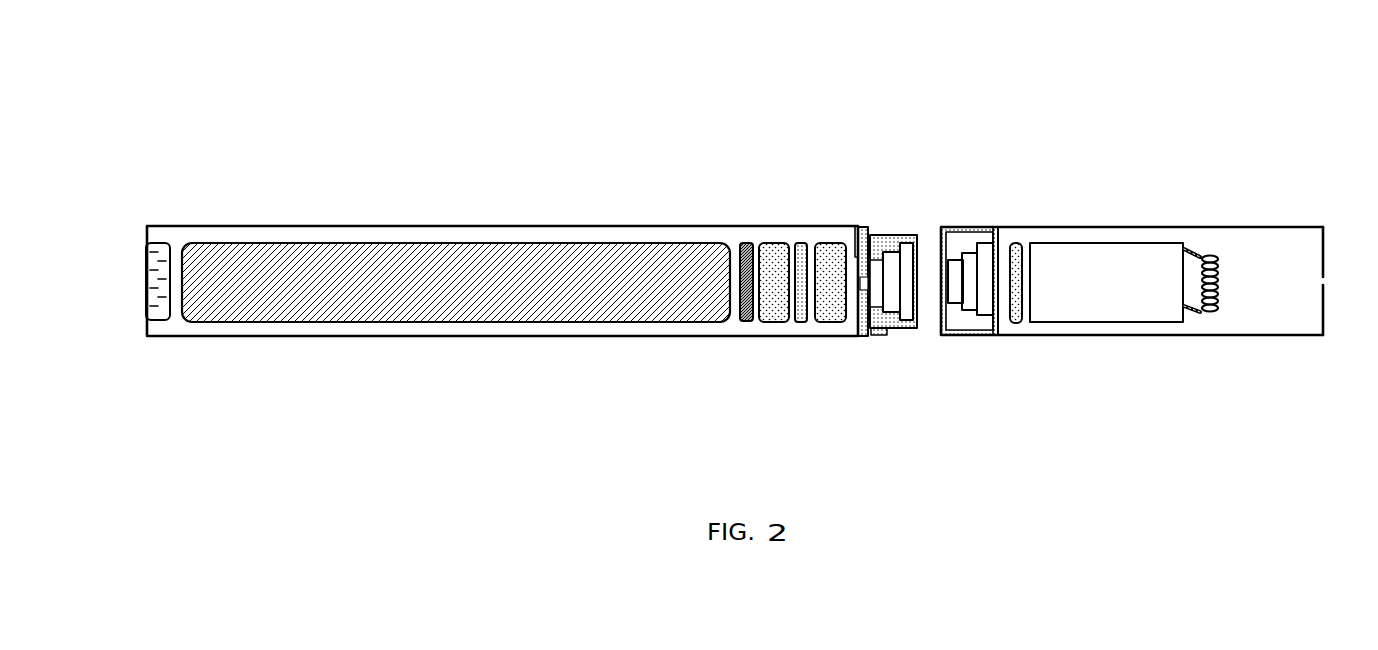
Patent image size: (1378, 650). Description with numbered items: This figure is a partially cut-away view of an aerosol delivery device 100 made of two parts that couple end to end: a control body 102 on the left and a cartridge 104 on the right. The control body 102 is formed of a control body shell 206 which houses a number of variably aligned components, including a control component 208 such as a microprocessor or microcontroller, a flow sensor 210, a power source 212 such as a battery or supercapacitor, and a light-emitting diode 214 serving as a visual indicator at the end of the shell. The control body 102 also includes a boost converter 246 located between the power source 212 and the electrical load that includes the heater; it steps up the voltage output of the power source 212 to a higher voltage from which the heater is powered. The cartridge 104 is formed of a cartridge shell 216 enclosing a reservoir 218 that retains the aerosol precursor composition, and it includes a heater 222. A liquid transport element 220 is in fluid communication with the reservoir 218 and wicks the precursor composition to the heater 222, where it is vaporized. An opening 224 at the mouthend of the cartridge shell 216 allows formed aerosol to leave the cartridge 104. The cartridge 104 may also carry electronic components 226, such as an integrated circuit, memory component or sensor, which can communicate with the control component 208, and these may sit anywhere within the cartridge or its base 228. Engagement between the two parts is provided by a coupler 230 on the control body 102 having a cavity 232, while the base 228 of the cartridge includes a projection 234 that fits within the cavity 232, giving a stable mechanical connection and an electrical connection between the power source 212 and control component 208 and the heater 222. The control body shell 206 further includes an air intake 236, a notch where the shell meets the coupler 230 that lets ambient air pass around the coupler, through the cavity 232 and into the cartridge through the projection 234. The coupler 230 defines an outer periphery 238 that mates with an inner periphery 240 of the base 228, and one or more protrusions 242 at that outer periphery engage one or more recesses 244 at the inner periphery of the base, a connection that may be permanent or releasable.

The aerosol delivery device 100 is at (632, 68).
The control body 102 is at (220, 188).
The cartridge 104 is at (1146, 191).
The control body shell 206 is at (283, 337).
The control component 208 is at (777, 322).
The flow sensor 210 is at (833, 322).
The power source 212 is at (427, 322).
The light-emitting diode 214 is at (157, 325).
The cartridge shell 216 is at (1090, 337).
The reservoir 218 is at (1130, 323).
The liquid transport element 220 is at (1201, 314).
The heater 222 is at (1219, 306).
The opening 224 is at (1321, 277).
The electronic components 226 is at (1018, 324).
The base 228 is at (994, 337).
The coupler 230 is at (891, 268).
The cavity 232 is at (891, 252).
The projection 234 is at (969, 253).
The air intake 236 is at (861, 238).
The outer periphery 238 is at (900, 243).
The inner periphery 240 is at (962, 233).
The protrusion 242 is at (877, 336).
The recess 244 is at (981, 290).
The boost converter 246 is at (746, 242).